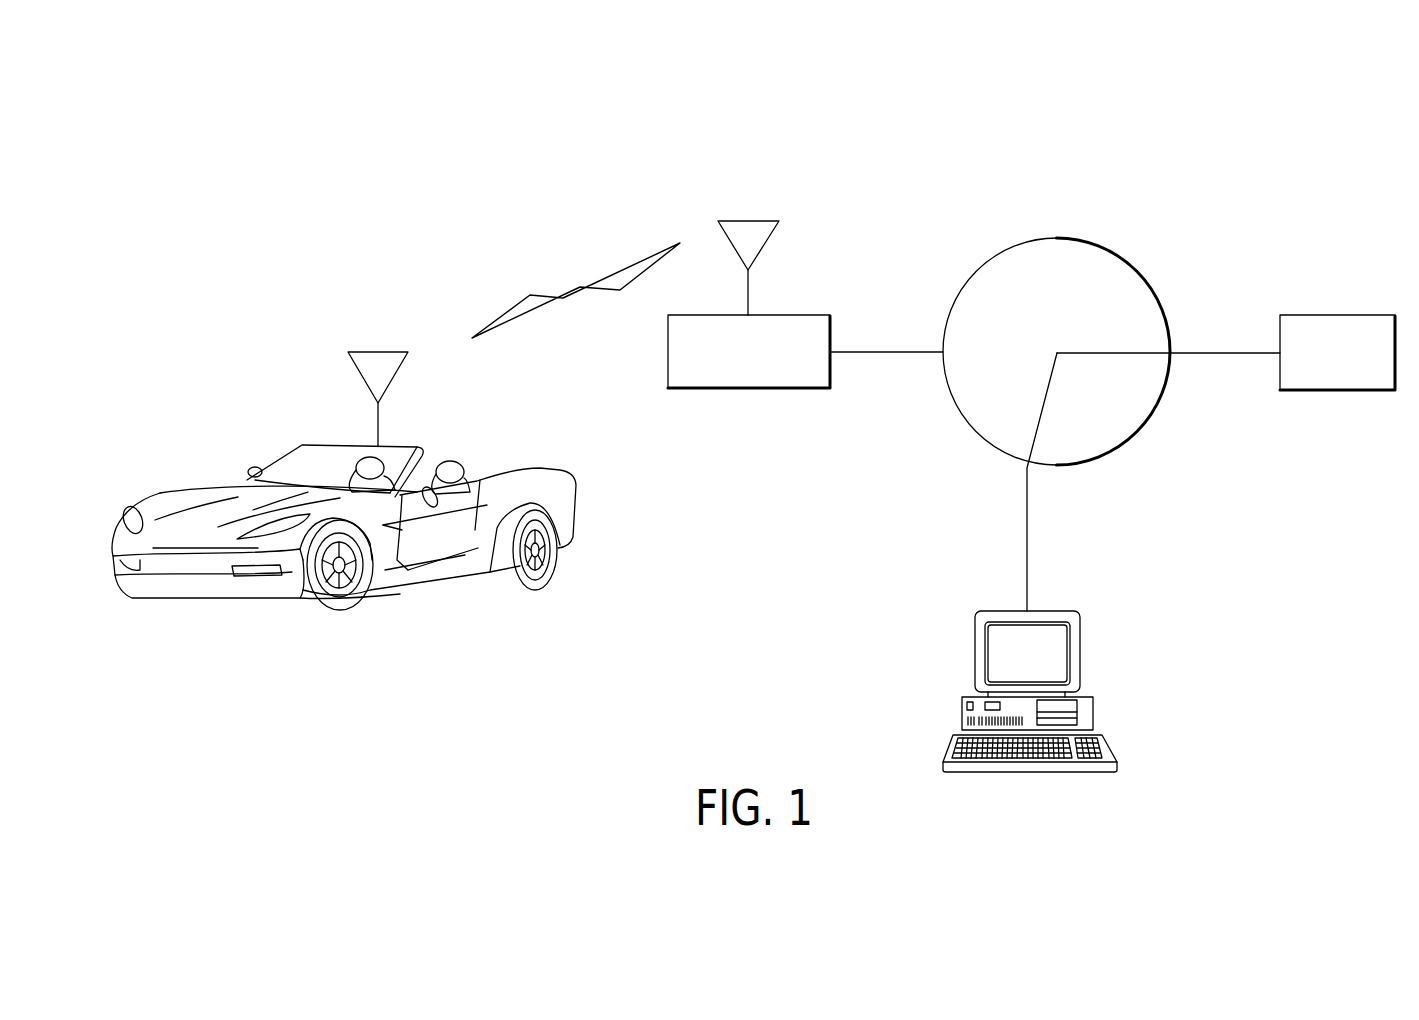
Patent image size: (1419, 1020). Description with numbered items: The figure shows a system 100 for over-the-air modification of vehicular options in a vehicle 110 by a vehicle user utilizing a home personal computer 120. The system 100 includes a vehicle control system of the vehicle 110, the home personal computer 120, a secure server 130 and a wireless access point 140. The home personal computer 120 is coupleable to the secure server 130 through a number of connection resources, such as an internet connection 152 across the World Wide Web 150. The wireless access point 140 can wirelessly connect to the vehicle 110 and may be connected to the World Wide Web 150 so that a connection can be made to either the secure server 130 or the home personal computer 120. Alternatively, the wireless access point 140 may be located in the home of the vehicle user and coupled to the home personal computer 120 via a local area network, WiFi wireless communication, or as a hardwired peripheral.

The system 100 is at (458, 158).
The vehicle 110 is at (157, 495).
The home personal computer 120 is at (975, 652).
The secure server 130 is at (1316, 315).
The wireless access point 140 is at (752, 388).
The World Wide Web 150 is at (1057, 238).
The internet connection 152 is at (1045, 404).